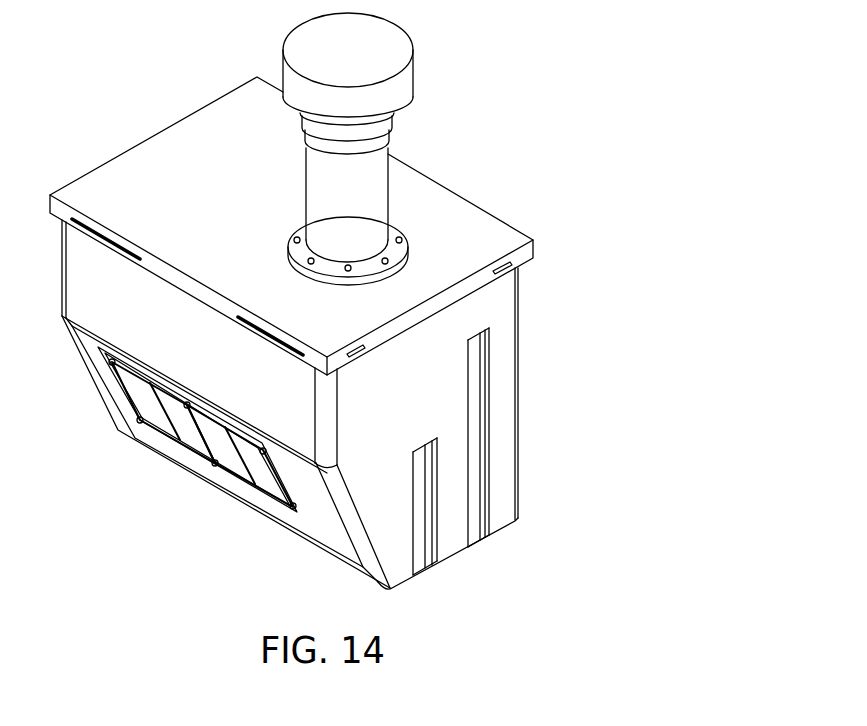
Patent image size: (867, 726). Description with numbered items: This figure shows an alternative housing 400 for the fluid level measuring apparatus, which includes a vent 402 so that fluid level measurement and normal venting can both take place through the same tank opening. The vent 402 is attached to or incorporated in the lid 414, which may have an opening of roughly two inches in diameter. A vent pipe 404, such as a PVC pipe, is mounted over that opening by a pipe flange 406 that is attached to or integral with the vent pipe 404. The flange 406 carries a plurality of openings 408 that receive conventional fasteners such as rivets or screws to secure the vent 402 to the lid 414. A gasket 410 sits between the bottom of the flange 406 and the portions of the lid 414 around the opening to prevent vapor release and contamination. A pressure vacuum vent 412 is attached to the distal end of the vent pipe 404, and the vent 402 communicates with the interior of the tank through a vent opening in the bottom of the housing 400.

The housing 400 is at (394, 301).
The vent 402 is at (296, 301).
The vent pipe 404 is at (306, 181).
The pipe flange 406 is at (292, 240).
The openings 408 is at (400, 240).
The gasket 410 is at (342, 286).
The pressure vacuum vent 412 is at (413, 76).
The lid 414 is at (113, 164).